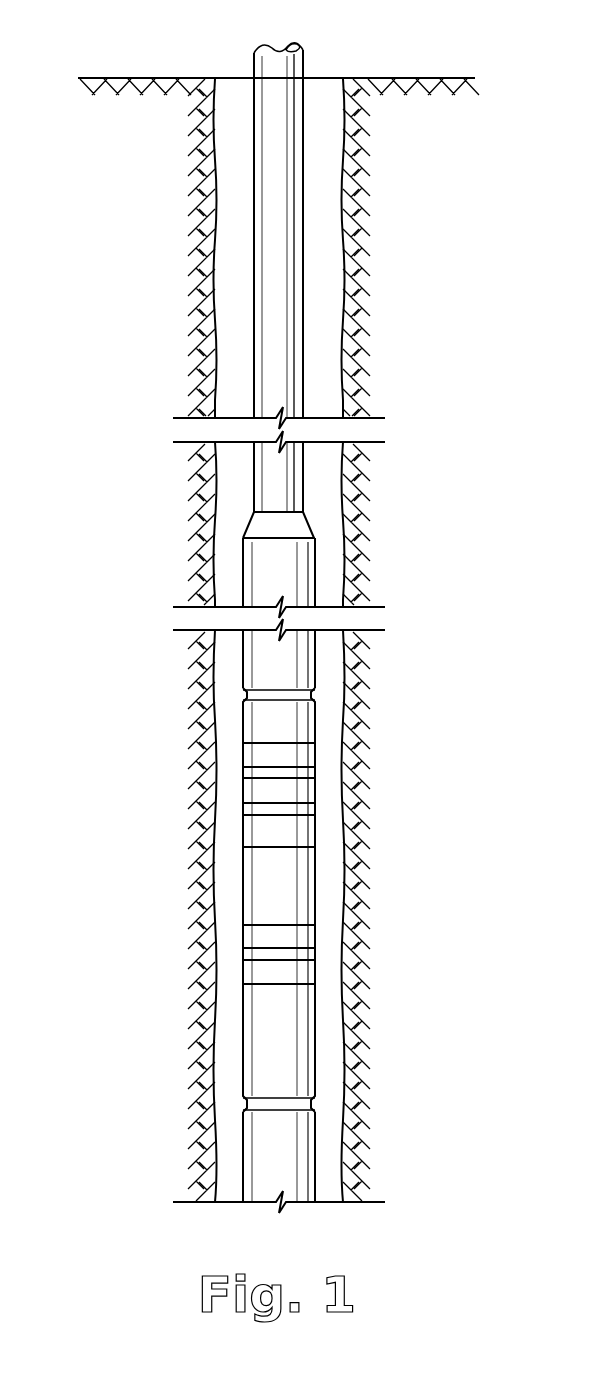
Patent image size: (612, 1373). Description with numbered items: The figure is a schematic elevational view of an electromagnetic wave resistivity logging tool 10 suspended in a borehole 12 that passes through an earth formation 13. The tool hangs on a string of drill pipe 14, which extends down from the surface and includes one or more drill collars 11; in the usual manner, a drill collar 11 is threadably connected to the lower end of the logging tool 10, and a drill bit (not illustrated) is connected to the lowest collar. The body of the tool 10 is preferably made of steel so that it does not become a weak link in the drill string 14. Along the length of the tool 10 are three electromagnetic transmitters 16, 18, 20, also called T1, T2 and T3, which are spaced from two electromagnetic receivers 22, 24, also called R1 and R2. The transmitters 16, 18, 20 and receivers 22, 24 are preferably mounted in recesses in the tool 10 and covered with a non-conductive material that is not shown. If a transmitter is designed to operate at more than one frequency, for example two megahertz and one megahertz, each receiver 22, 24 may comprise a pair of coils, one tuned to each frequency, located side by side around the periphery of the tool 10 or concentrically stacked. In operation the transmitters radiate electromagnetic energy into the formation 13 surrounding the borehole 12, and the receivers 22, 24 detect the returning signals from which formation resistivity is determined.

The logging tool 10 is at (208, 900).
The drill collar 11 is at (240, 569).
The borehole 12 is at (230, 268).
The earth formation 13 is at (188, 333).
The string of drill pipe 14 is at (253, 97).
The electromagnetic transmitter 16 is at (250, 828).
The electromagnetic transmitter 18 is at (252, 793).
The electromagnetic transmitter 20 is at (252, 755).
The electromagnetic receiver 22 is at (252, 936).
The electromagnetic receiver 24 is at (253, 975).